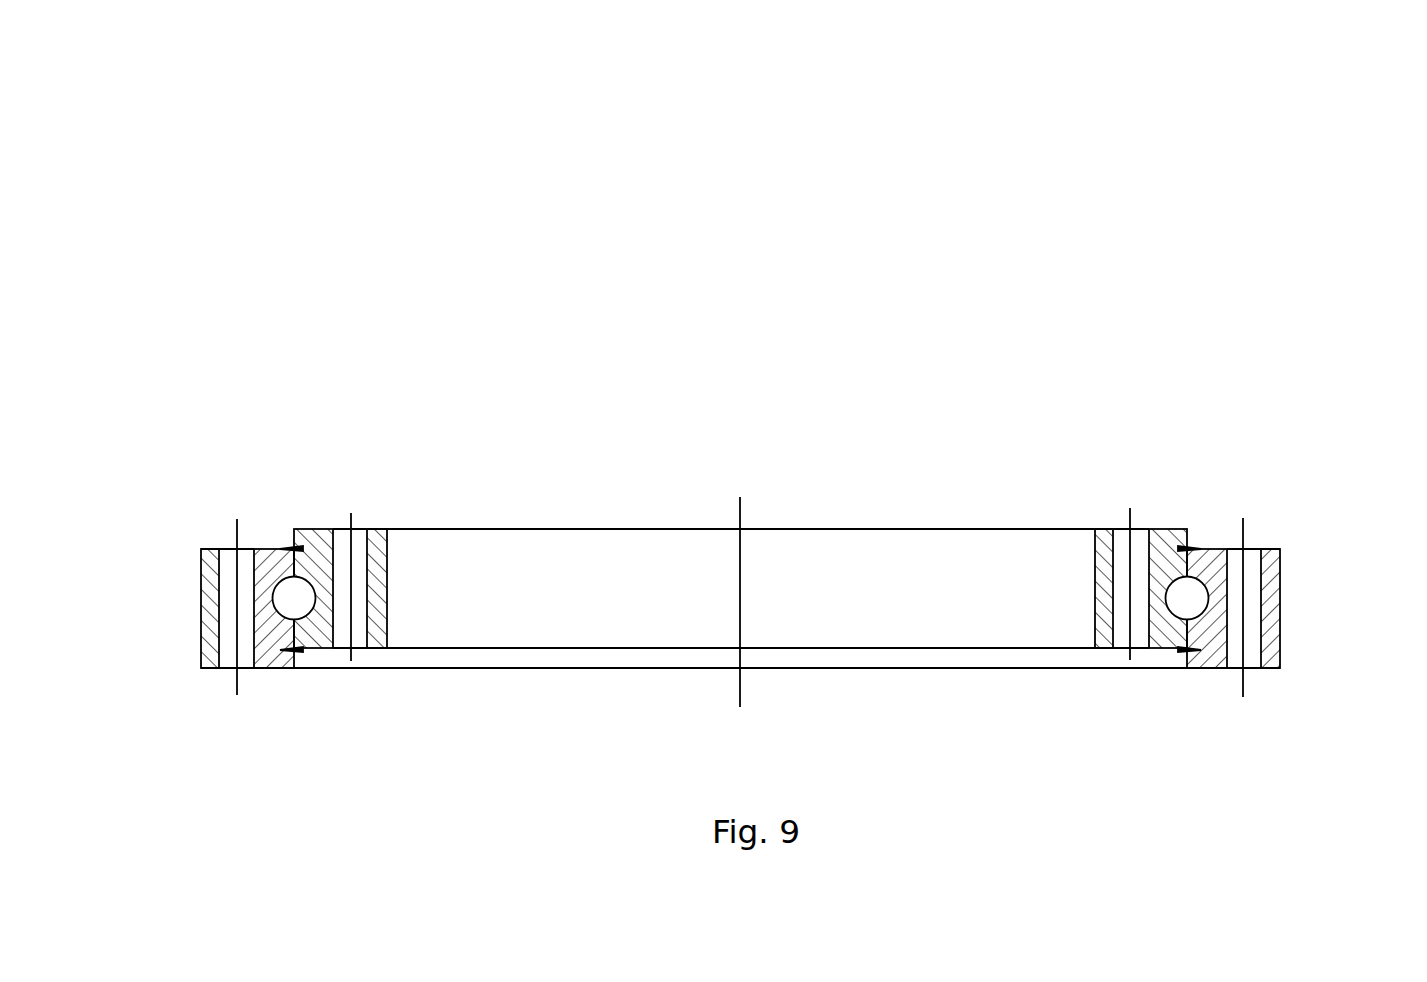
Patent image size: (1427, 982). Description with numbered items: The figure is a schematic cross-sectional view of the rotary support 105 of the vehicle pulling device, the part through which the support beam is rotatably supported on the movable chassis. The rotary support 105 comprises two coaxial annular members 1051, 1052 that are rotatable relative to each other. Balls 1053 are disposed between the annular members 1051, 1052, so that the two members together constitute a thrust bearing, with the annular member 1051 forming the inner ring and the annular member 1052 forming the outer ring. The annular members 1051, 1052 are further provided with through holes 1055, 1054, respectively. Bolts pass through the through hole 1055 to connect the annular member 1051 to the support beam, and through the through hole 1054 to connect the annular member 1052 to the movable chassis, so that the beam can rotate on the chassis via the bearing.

The rotary support 105 is at (1252, 228).
The annular member 1051 is at (1167, 535).
The annular member 1052 is at (1272, 567).
The balls 1053 is at (294, 599).
The through hole 1054 is at (230, 618).
The through hole 1055 is at (1116, 543).